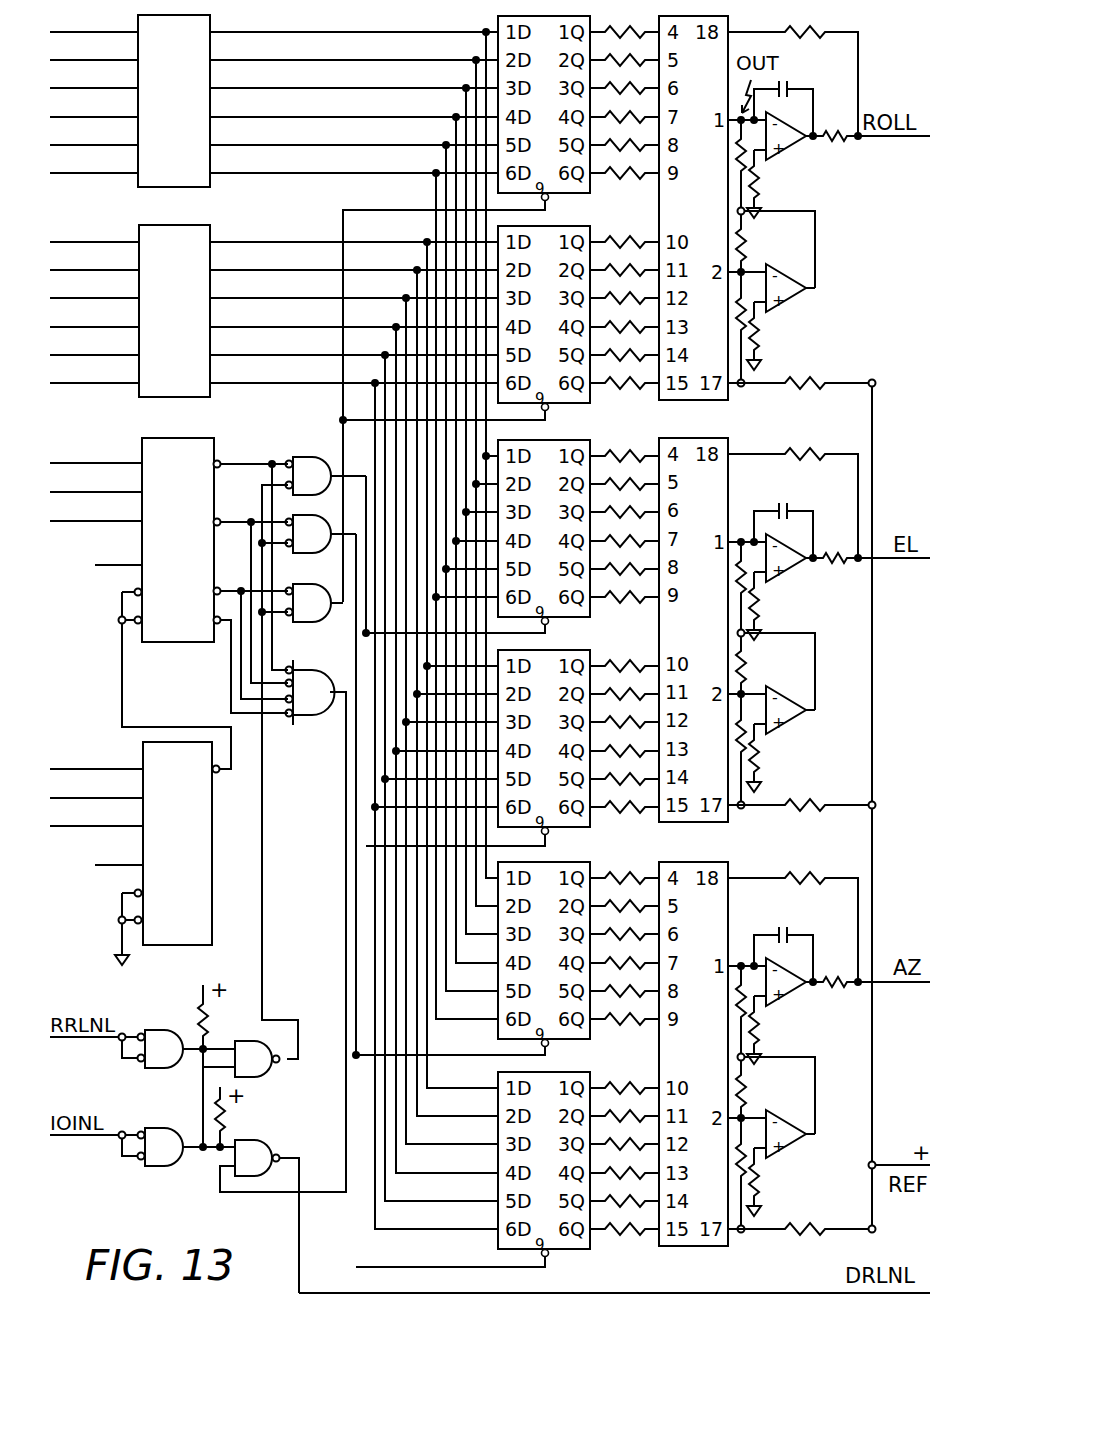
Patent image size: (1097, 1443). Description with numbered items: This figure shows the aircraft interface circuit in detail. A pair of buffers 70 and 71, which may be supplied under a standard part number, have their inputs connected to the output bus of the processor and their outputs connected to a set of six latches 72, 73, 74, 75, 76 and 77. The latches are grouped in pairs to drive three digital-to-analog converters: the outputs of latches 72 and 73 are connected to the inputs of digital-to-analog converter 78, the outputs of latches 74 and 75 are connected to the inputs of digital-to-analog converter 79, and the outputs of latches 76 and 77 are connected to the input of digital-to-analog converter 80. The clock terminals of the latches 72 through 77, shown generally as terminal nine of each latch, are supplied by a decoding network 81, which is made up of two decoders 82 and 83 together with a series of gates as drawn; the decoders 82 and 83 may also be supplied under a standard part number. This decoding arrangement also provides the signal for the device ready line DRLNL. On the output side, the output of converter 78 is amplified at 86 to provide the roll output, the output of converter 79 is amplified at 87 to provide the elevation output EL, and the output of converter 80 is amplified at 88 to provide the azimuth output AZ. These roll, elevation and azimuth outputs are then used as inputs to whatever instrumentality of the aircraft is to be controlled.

The buffer 70 is at (204, 16).
The buffer 71 is at (204, 224).
The latch 72 is at (580, 196).
The latch 73 is at (580, 406).
The latch 74 is at (580, 620).
The latch 75 is at (580, 830).
The latch 76 is at (580, 1042).
The latch 77 is at (580, 1252).
The digital-to-analog converter 78 is at (708, 18).
The digital-to-analog converter 79 is at (708, 438).
The digital-to-analog converter 80 is at (708, 862).
The decoding network 81 is at (270, 437).
The decoder 82 is at (148, 438).
The decoder 83 is at (212, 886).
The amplifier 86 is at (830, 21).
The amplifier 87 is at (830, 441).
The amplifier 88 is at (830, 863).